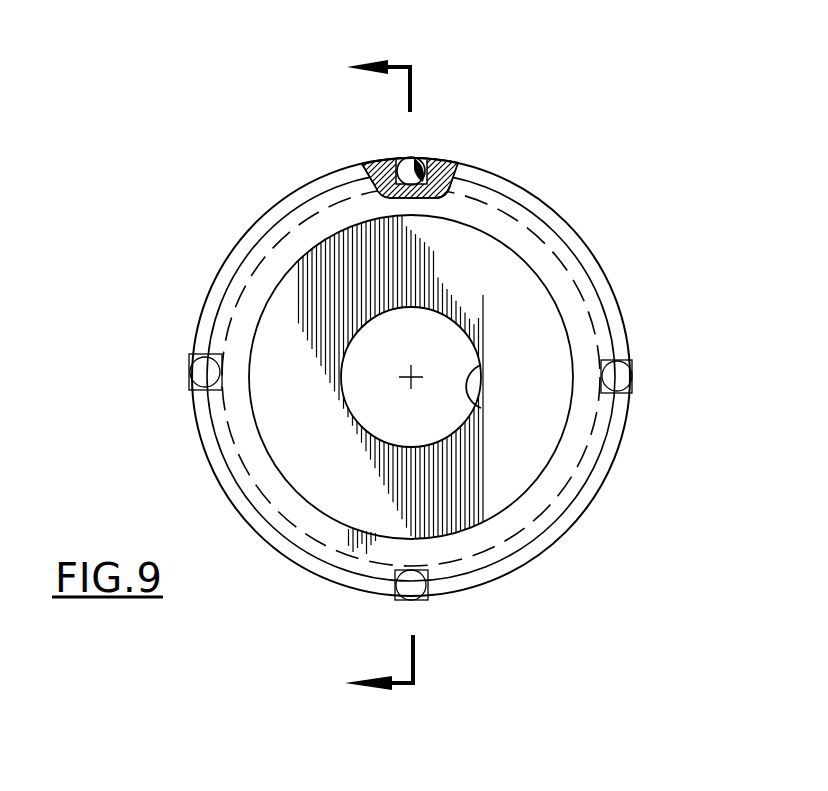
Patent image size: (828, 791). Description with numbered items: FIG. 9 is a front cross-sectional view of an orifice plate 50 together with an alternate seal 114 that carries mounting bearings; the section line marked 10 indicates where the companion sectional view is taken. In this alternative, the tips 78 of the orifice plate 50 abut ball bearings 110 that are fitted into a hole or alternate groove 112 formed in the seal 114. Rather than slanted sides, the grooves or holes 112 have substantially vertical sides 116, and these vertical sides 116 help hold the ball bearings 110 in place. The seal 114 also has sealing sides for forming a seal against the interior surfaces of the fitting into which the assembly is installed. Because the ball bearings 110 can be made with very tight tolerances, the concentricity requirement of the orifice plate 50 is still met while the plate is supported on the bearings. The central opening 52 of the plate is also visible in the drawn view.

The section line 10- 10 is at (362, 371).
The orifice plate 50 is at (360, 483).
The central bore 52 is at (481, 365).
The tips 78 is at (430, 198).
The ball bearings 110 is at (417, 157).
The groove 112 is at (421, 151).
The seal 114 is at (608, 482).
The vertical sides 116 is at (412, 198).